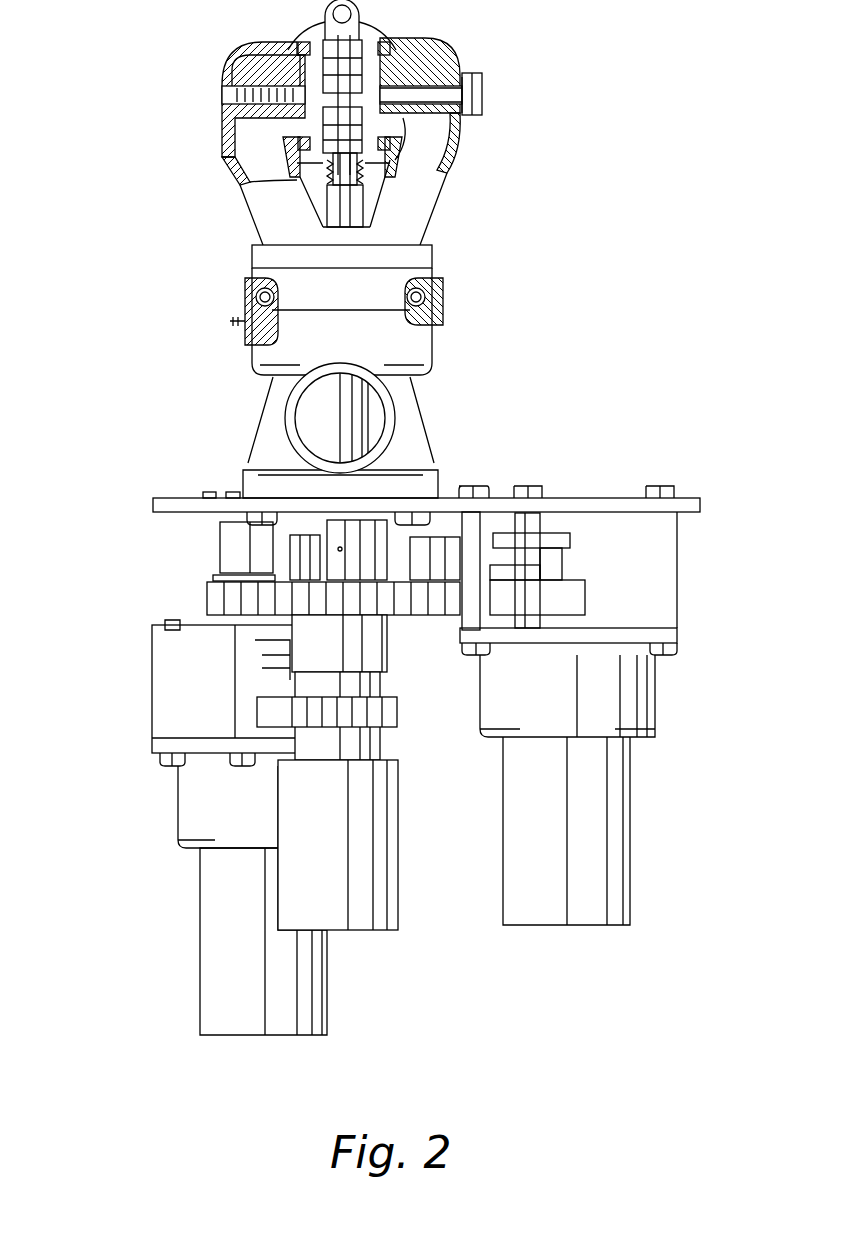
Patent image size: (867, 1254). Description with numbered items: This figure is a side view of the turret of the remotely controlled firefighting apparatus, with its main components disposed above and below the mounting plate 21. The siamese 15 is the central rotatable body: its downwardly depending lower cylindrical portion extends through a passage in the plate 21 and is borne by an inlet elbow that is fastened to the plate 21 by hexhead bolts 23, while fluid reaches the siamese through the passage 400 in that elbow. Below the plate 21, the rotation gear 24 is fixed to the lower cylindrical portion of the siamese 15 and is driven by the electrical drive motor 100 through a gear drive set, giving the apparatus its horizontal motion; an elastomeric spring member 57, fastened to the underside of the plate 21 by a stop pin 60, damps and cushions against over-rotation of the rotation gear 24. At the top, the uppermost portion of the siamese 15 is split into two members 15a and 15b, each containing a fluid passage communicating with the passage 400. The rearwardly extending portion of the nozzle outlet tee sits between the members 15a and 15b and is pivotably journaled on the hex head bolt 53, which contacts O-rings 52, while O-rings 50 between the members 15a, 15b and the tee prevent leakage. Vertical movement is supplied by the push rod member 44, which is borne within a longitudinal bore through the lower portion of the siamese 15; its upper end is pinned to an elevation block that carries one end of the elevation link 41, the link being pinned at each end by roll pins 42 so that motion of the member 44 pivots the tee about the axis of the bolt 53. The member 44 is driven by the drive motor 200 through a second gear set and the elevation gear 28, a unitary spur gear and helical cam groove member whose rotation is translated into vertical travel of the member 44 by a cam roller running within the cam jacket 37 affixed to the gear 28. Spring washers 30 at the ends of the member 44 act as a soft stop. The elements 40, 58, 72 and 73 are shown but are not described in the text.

The siamese 15 is at (433, 256).
The siamese member 15a is at (428, 155).
The siamese member 15b is at (255, 150).
The mounting plate 21 is at (160, 506).
The hexhead bolts 23 is at (258, 522).
The rotation gear 24 is at (255, 585).
The elevation gear 28 is at (398, 717).
The spring washers 30 is at (362, 180).
The cam jacket 37 is at (396, 918).
The clevis 40 is at (325, 15).
The elevation link 41 is at (340, 103).
The roll pins 42 is at (222, 72).
The push rod member 44 is at (333, 197).
The O-rings 50 is at (298, 45).
The O-rings 52 is at (458, 82).
The hex head bolt 53 is at (482, 104).
The elastomeric spring member 57 is at (220, 535).
The plate 58 is at (215, 578).
The stop pin 60 is at (225, 603).
The spacer 72 is at (208, 492).
The spacer 73 is at (232, 492).
The electrical drive motor 100 is at (632, 862).
The drive motor 200 is at (205, 968).
The passage 400 is at (375, 410).